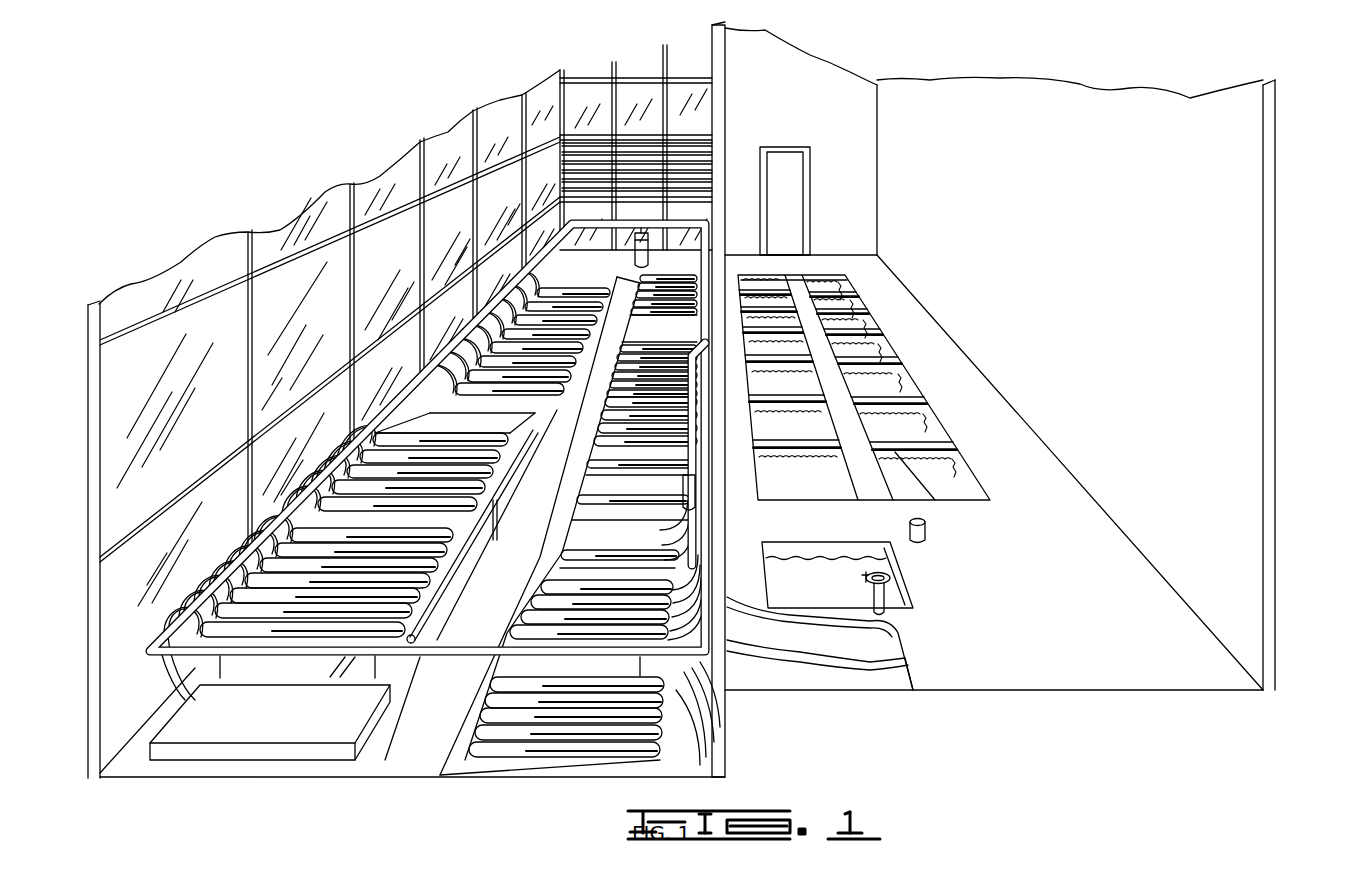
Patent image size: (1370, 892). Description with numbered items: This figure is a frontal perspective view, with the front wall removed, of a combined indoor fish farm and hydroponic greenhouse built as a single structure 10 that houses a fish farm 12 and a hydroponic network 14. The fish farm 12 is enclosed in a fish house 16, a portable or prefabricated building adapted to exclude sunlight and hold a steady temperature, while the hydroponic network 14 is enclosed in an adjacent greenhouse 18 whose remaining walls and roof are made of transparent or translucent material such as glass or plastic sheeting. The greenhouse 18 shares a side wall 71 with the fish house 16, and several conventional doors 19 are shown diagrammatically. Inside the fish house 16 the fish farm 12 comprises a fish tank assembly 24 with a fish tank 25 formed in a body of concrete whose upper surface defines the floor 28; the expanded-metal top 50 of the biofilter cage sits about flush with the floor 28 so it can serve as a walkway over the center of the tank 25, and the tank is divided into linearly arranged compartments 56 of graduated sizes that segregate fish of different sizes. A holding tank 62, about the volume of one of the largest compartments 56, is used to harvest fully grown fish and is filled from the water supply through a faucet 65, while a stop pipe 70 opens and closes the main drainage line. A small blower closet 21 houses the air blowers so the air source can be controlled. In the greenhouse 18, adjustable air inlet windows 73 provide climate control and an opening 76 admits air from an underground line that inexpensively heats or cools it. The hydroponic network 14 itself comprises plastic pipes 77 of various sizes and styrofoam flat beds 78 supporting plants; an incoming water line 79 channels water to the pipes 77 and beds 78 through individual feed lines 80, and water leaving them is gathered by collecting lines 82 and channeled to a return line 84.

The structure 10 is at (876, 74).
The fish farm 12 is at (1280, 150).
The hydroponic network 14 is at (430, 750).
The fish house 16 is at (1272, 242).
The greenhouse 18 is at (298, 228).
The doors 19 is at (785, 147).
The blower closet 21 is at (870, 648).
The fish tank assembly 24 is at (866, 297).
The fish tank 25 is at (880, 352).
The floor 28 is at (988, 432).
The top of the cage 50 is at (858, 440).
The compartments 56 is at (930, 488).
The holding tank 62 is at (800, 580).
The faucet 65 is at (886, 598).
The stop pipe 70 is at (927, 530).
The side wall 71 is at (727, 90).
The air inlet windows 73 is at (580, 165).
The opening 76 is at (641, 216).
The plastic pipes 77 is at (548, 750).
The flat beds 78 is at (258, 752).
The incoming water line 79 is at (462, 656).
The feed lines 80 is at (690, 700).
The collecting lines 82 is at (522, 455).
The return line 84 is at (628, 271).